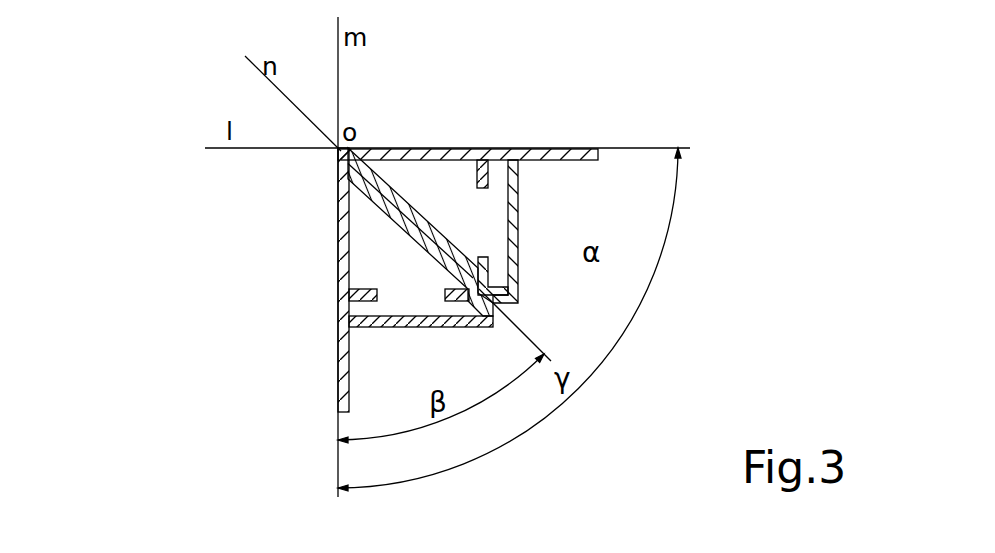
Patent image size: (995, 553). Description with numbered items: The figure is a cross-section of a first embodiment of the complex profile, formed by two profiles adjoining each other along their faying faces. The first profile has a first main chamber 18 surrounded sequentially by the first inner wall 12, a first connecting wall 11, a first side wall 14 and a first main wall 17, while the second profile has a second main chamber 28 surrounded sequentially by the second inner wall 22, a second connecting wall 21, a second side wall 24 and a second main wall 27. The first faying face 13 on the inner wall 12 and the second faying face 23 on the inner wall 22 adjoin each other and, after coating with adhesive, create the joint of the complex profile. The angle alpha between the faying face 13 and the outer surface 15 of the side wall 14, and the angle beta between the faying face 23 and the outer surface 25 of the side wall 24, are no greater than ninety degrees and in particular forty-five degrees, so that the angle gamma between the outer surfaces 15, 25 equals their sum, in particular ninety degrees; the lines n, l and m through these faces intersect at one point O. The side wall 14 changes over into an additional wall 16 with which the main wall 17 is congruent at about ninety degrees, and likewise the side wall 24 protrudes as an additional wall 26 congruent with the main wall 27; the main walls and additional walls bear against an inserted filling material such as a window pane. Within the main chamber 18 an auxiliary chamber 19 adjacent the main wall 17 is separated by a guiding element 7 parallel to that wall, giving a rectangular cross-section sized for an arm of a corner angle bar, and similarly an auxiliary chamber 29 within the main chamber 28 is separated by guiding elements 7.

The guiding element 7 is at (487, 271).
The first connecting wall 11 is at (413, 150).
The first inner wall 12 is at (357, 157).
The first faying face 13 is at (360, 166).
The first side wall 14 is at (521, 156).
The outer surface of the first side wall 15 is at (566, 151).
The first additional wall 16 is at (530, 157).
The first main wall 17 is at (512, 227).
The first main chamber 18 is at (452, 170).
The first auxiliary chamber 19 is at (489, 180).
The second connecting wall 21 is at (340, 230).
The second inner wall 22 is at (340, 159).
The second faying face 23 is at (341, 187).
The second side wall 24 is at (348, 312).
The outer surface of the second side wall 25 is at (352, 306).
The second additional wall 26 is at (345, 402).
The second main wall 27 is at (360, 329).
The second main chamber 28 is at (363, 260).
The second auxiliary chamber 29 is at (362, 299).